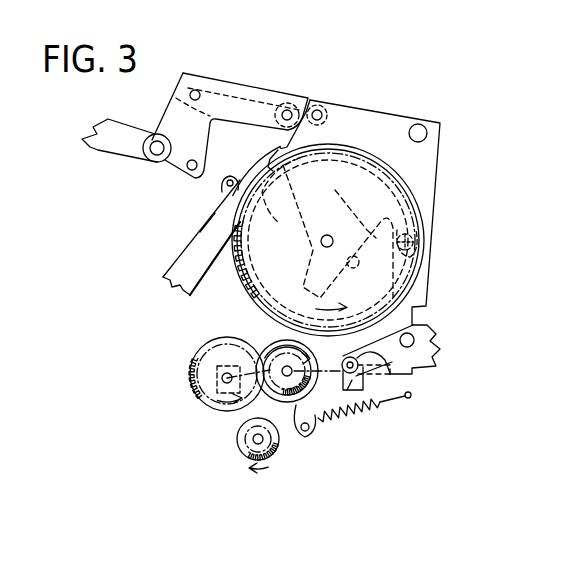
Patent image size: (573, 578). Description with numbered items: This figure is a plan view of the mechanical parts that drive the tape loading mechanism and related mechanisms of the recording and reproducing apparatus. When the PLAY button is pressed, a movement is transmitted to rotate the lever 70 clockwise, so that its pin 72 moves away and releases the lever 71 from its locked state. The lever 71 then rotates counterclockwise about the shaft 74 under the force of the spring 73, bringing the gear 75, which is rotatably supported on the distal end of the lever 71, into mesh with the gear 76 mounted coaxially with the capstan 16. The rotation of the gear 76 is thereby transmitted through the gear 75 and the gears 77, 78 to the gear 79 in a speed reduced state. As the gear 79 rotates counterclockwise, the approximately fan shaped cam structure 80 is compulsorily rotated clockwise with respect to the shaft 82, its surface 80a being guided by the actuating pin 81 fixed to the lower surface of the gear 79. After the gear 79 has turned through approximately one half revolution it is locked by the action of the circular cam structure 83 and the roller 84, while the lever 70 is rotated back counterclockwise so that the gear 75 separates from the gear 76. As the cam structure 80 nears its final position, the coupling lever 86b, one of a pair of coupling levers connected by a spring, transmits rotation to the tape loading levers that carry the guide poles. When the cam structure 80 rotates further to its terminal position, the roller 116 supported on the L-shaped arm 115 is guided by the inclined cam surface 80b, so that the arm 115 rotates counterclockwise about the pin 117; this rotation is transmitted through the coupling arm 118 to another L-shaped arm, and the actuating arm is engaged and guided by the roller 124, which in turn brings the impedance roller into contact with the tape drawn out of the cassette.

The capstan 16 is at (255, 446).
The lever 70 is at (438, 348).
The lever 71 is at (347, 390).
The pin 72 is at (385, 377).
The spring 73 is at (383, 410).
The shaft 74 is at (285, 366).
The gear 75 is at (199, 349).
The gear 76 is at (240, 436).
The gear 77 is at (283, 410).
The gear 78 is at (310, 434).
The gear 79 is at (230, 228).
The cam structure 80 is at (357, 104).
The surface 80a is at (371, 222).
The inclined cam surface 80b is at (279, 156).
The actuating pin 81 is at (324, 234).
The shaft 82 is at (420, 123).
The circular cam structure 83 is at (246, 290).
The roller 84 is at (421, 204).
The coupling lever 86b is at (210, 221).
The L-shaped arm 115 is at (250, 87).
The roller 116 is at (288, 104).
The pin 117 is at (187, 73).
The coupling arm 118 is at (120, 119).
The roller 124 is at (188, 168).